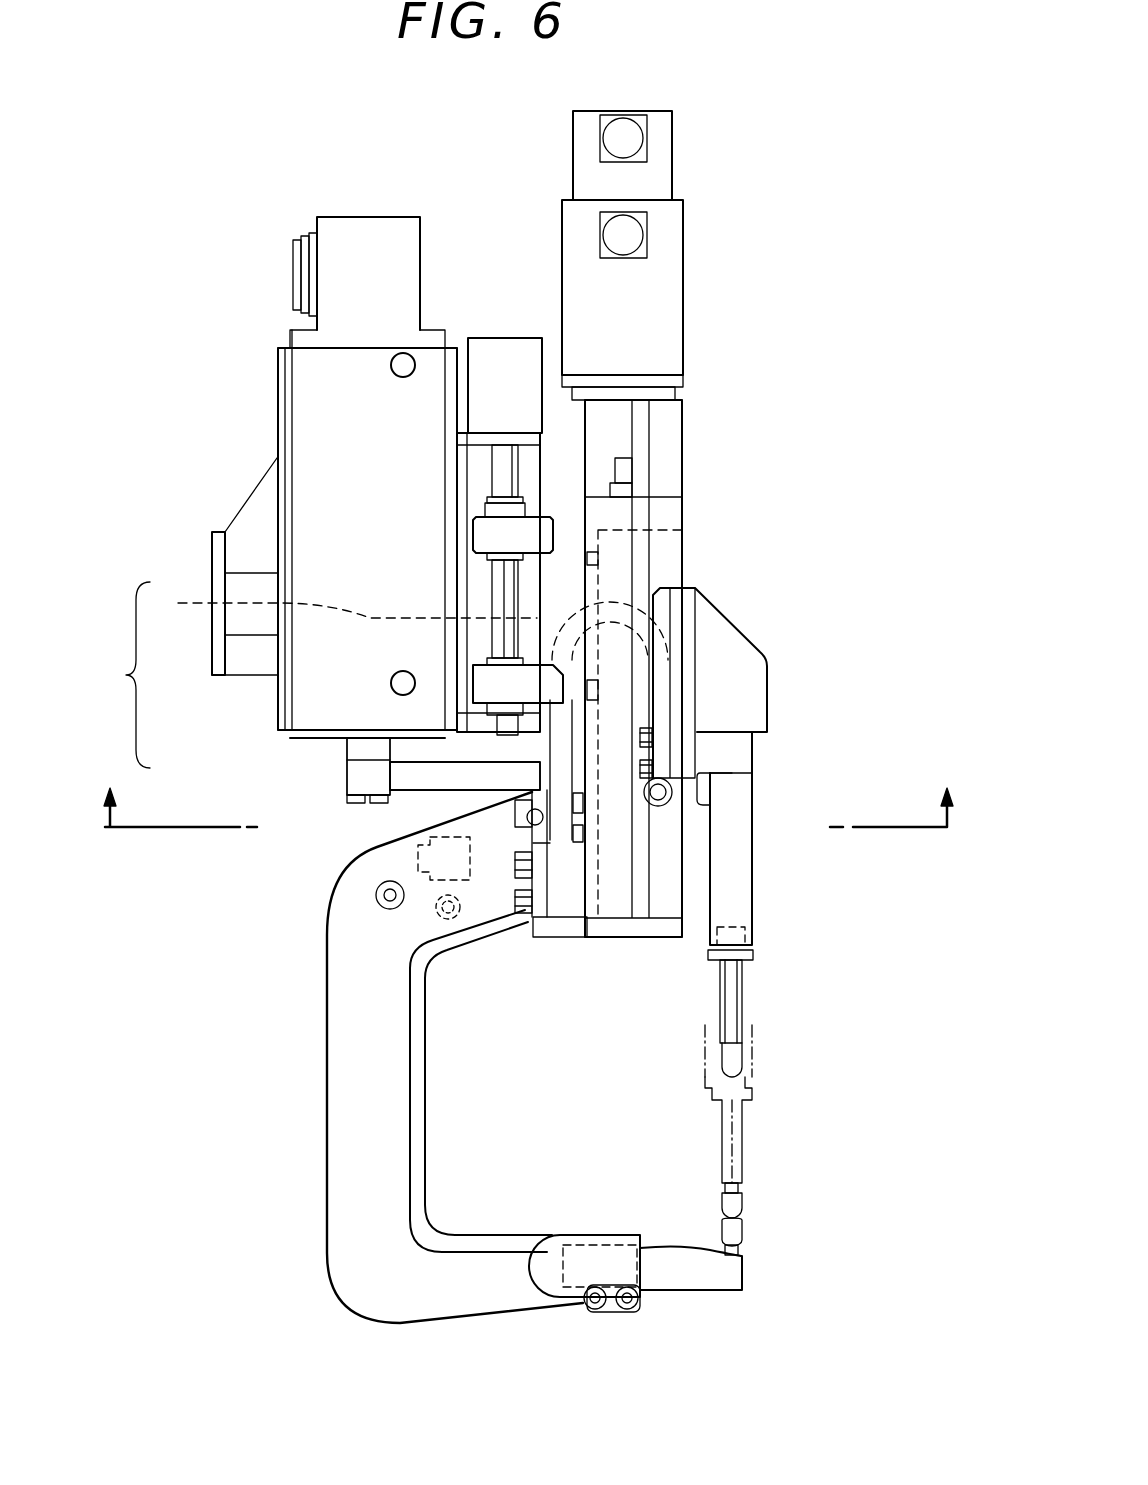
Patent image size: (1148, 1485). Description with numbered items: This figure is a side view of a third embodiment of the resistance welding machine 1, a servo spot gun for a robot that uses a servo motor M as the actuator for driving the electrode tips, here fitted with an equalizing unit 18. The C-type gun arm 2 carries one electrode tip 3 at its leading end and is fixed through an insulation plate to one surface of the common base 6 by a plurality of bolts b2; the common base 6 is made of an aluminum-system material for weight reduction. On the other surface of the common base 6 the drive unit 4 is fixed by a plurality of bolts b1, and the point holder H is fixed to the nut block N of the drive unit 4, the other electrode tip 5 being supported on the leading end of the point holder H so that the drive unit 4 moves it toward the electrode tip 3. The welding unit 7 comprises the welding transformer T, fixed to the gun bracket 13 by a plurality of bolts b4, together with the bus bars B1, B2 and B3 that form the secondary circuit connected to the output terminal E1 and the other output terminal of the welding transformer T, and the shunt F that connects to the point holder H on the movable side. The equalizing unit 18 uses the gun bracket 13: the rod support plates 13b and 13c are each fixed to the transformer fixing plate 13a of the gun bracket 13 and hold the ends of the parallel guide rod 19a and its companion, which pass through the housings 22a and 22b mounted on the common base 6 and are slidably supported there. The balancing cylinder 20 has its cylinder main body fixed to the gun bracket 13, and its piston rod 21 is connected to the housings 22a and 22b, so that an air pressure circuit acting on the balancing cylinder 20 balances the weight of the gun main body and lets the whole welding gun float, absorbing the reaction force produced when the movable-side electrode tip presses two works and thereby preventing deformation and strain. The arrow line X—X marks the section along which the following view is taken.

The resistance welding machine 1 is at (262, 243).
The gun arm 2 is at (327, 1045).
The electrode tip 3 is at (742, 1236).
The drive unit 4 is at (668, 468).
The electrode tip 5 is at (735, 1065).
The common base 6 is at (562, 907).
The welding unit 7 is at (131, 675).
The gun bracket 13 is at (247, 510).
The transformer fixing plate 13a is at (350, 445).
The rod support plate 13b is at (520, 722).
The rod support plate 13c is at (465, 440).
The equalizing unit 18 is at (560, 455).
The guide rod 19a is at (502, 595).
The balancing cylinder 20 is at (512, 350).
The piston rod 21 is at (500, 473).
The housing 22a is at (513, 690).
The housing 22b is at (503, 540).
The servo motor M is at (673, 302).
The nut block N is at (688, 633).
The point holder H is at (746, 890).
The shunt F is at (347, 607).
The welding transformer T is at (362, 748).
The output terminal E1 is at (370, 735).
The bus bar B1 is at (420, 778).
The bus bar B2 is at (465, 776).
The bus bar B3 is at (672, 748).
The bolts b1 is at (598, 558).
The bolts b2 is at (510, 897).
The bolts b4 is at (410, 360).
The arrow line X— X is at (527, 805).